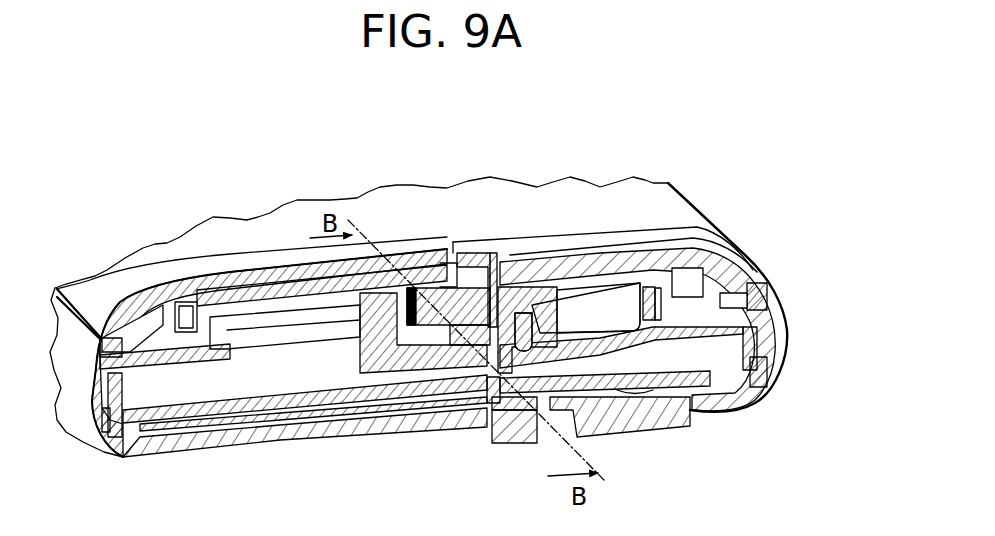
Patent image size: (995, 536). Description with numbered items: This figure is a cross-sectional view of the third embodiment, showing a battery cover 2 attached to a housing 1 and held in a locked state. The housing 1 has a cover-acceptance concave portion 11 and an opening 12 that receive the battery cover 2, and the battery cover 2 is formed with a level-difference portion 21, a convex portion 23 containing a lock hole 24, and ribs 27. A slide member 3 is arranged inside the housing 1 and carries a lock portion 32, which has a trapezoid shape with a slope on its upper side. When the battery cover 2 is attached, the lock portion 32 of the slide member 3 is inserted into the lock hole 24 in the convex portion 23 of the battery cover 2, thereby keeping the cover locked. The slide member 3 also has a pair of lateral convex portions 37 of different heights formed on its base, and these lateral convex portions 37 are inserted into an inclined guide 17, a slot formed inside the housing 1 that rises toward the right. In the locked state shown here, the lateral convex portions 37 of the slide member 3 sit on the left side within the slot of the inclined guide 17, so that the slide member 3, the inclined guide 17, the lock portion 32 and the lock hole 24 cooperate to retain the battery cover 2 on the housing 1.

The housing 1 is at (457, 222).
The battery cover 2 is at (205, 273).
The slide member 3 is at (688, 237).
The cover-acceptance concave portion 11 is at (253, 288).
The opening 12 is at (392, 286).
The inclined guide 17 is at (621, 323).
The level-difference portion 21 is at (607, 250).
The convex portion 23 is at (400, 330).
The lock hole 24 is at (443, 298).
The ribs 27 is at (170, 332).
The lock portion 32 is at (440, 300).
The lateral convex portions 37 is at (655, 352).